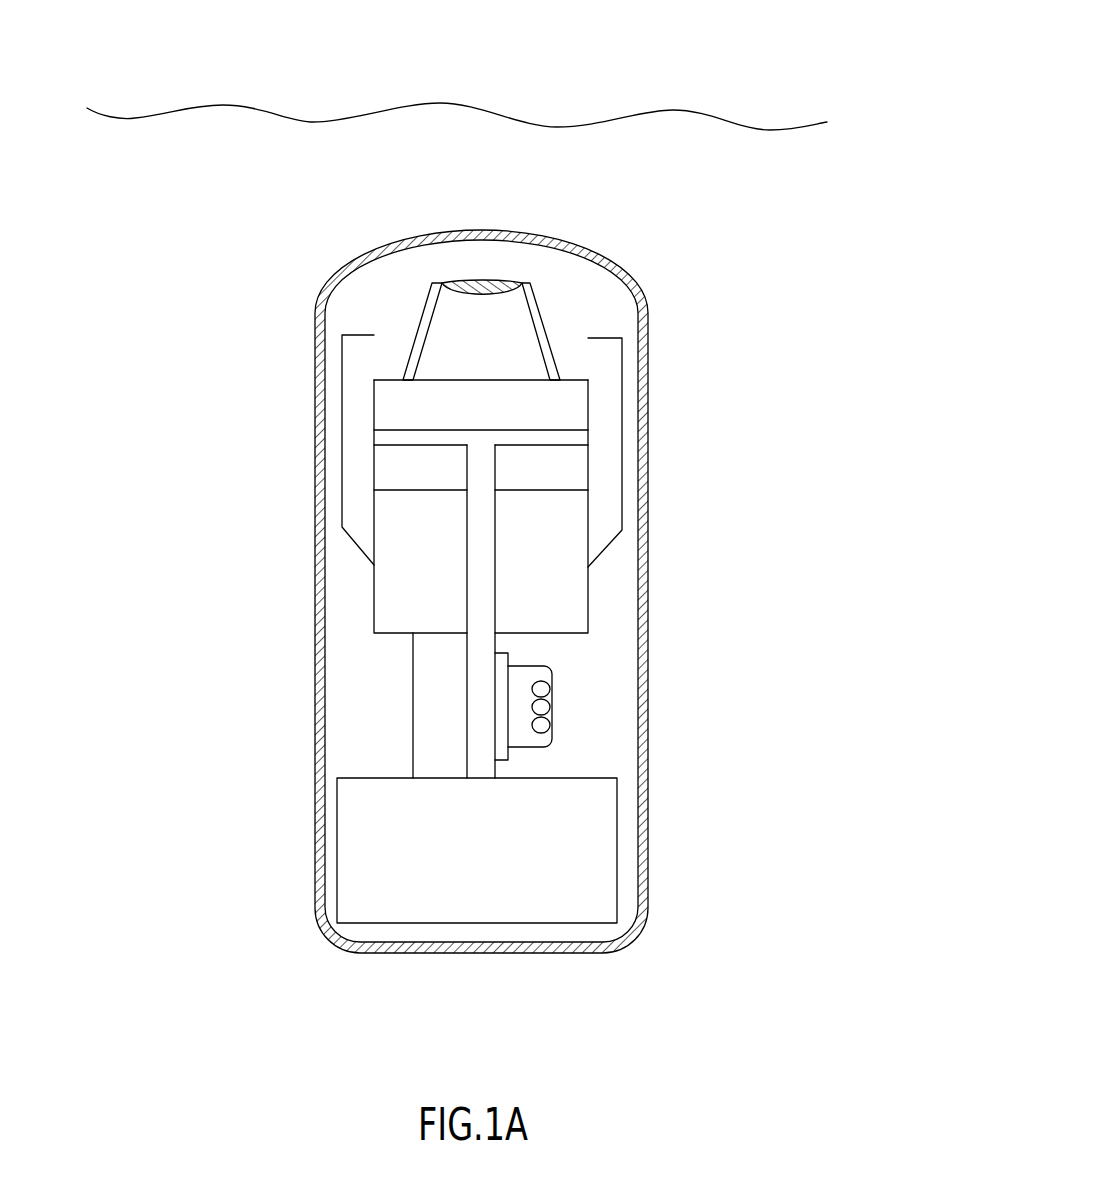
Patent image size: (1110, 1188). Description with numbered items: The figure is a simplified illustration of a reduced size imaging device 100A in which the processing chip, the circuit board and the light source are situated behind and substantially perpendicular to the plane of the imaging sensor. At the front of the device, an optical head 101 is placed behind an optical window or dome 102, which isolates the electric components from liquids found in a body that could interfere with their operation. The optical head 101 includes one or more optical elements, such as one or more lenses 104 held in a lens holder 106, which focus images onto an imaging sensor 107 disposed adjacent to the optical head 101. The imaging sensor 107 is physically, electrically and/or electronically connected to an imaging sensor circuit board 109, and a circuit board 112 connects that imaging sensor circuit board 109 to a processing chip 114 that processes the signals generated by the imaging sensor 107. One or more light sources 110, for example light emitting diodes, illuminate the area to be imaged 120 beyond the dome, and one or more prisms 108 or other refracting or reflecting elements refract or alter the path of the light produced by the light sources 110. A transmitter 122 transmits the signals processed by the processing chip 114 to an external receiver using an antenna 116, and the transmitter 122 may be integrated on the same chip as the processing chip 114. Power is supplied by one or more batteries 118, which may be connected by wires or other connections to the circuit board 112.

The imaging device 100A is at (757, 855).
The optical head 101 is at (667, 293).
The optical window or dome 102 is at (613, 270).
The lens 104 is at (481, 281).
The lens holder 106 is at (525, 283).
The imaging sensor 107 is at (548, 410).
The prism 108 is at (345, 400).
The imaging sensor circuit board 109 is at (557, 450).
The light source 110 is at (500, 579).
The circuit board 112 is at (588, 618).
The processing chip 114 is at (413, 690).
The antenna 116 is at (553, 712).
The battery 118 is at (358, 832).
The area to be imaged 120 is at (640, 110).
The transmitter 122 is at (503, 755).